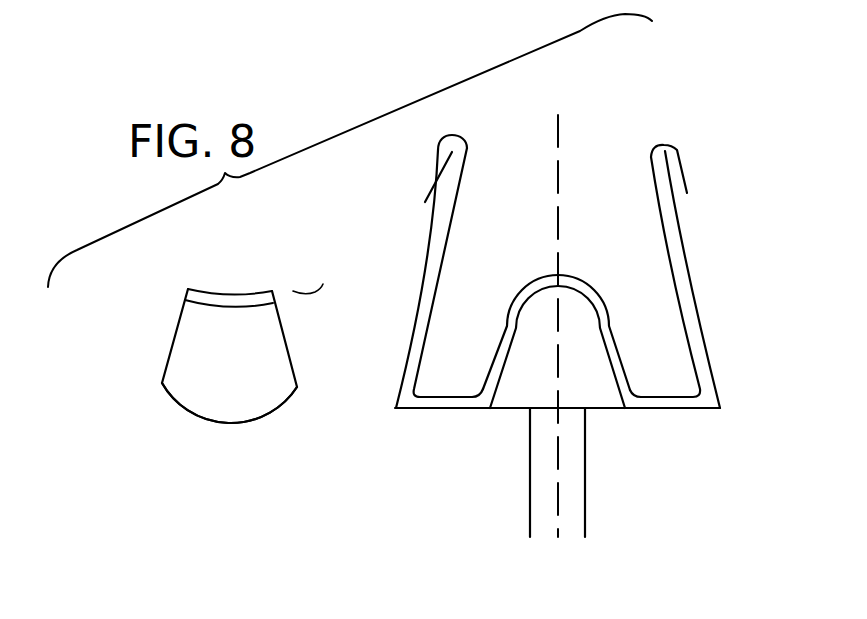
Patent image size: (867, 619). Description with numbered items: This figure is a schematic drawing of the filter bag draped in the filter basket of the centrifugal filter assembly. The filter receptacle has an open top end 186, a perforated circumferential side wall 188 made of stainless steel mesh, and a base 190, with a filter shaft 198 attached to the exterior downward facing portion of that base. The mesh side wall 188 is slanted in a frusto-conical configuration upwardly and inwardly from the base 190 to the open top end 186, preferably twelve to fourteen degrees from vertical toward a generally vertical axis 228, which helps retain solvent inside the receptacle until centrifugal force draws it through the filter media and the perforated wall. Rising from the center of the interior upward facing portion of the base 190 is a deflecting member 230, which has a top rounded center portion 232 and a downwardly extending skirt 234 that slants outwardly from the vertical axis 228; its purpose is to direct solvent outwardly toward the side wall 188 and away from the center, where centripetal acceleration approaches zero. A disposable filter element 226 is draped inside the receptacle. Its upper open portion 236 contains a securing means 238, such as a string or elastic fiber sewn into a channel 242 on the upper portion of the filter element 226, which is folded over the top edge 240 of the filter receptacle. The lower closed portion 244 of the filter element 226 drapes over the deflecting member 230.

The open top end 186 is at (590, 160).
The perforated circumferential side wall 188 is at (429, 232).
The base 190 is at (683, 410).
The filter shaft 198 is at (577, 465).
The disposable filter element 226 is at (468, 152).
The vertical axis 228 is at (560, 128).
The deflecting member 230 is at (518, 393).
The top rounded center portion 232 is at (568, 280).
The downwardly extending skirt 234 is at (603, 338).
The upper open portion 236 is at (660, 143).
The securing means 238 is at (302, 279).
The top edge 240 is at (677, 148).
The channel 242 is at (187, 298).
The lower closed portion 244 is at (272, 417).